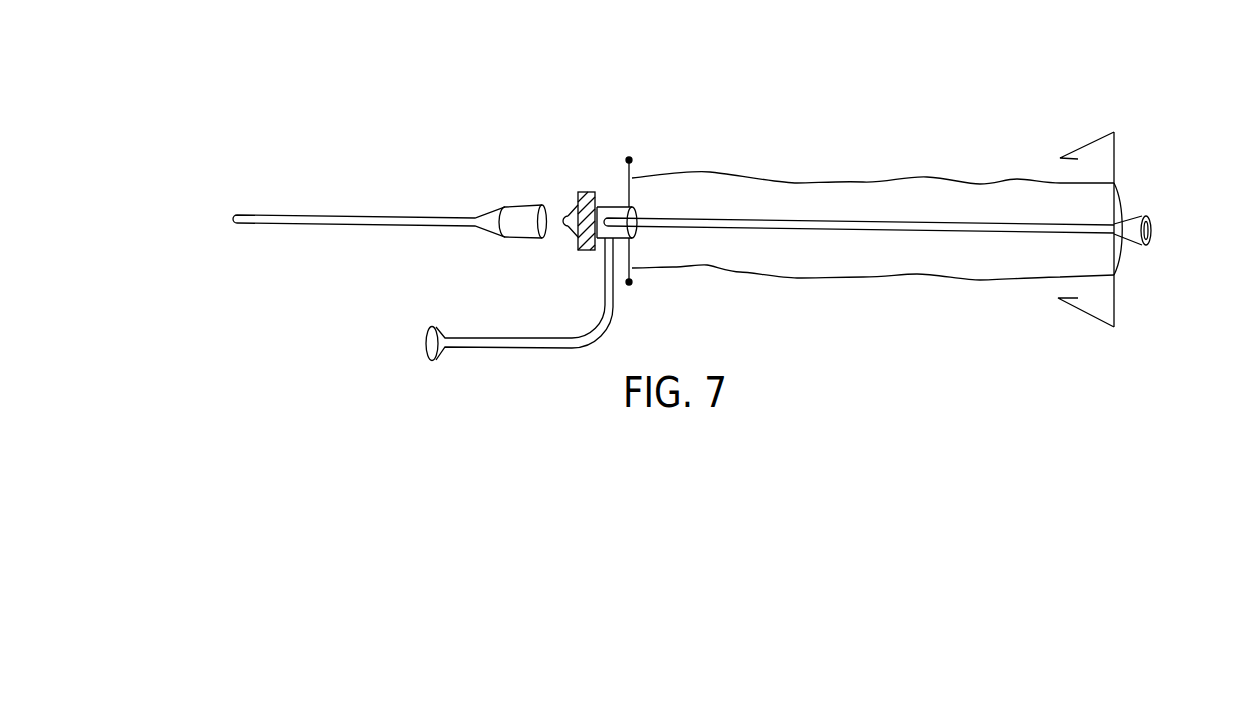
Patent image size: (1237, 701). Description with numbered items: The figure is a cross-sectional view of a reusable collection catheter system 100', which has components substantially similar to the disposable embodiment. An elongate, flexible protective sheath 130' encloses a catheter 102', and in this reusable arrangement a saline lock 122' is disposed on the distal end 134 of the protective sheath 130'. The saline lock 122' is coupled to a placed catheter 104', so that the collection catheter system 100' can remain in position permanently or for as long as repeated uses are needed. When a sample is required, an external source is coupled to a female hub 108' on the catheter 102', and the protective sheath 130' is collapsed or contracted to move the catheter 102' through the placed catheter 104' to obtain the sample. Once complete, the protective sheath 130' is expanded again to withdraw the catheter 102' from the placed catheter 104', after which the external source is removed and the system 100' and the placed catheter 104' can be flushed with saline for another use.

The collection catheter system 100' is at (705, 180).
The catheter 102' is at (859, 268).
The placed catheter 104' is at (390, 256).
The female hub 108' is at (1145, 267).
The saline lock 122' is at (577, 180).
The protective sheath 130' is at (877, 194).
The distal end of the protective sheath 134 is at (632, 178).